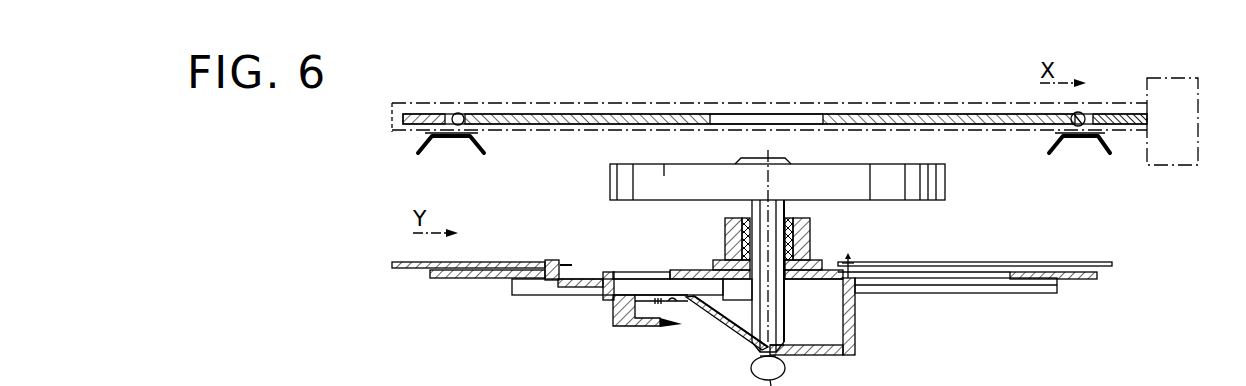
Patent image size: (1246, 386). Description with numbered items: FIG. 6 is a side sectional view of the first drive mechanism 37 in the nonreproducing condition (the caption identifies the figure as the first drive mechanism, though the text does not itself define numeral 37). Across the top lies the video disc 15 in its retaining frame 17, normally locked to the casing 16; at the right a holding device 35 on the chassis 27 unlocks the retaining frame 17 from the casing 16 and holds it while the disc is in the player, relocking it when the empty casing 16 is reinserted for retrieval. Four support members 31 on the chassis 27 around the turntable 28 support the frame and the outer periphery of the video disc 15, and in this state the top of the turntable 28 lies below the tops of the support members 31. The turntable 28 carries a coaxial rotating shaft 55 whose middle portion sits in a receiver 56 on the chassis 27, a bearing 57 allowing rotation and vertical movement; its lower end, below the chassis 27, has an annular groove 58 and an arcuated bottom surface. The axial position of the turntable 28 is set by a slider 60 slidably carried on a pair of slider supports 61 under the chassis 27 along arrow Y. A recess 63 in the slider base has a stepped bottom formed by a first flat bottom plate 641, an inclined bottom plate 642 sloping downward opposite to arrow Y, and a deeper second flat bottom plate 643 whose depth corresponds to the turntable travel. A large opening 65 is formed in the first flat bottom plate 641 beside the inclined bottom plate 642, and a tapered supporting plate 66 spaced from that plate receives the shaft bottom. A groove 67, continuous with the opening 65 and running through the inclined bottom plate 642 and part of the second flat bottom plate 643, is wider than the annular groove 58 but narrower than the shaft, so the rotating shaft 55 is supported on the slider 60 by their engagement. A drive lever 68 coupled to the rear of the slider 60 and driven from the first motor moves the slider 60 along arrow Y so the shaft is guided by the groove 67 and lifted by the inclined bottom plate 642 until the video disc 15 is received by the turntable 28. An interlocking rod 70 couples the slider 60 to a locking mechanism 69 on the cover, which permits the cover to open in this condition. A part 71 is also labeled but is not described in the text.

The video disc 15 is at (897, 118).
The casing 16 is at (850, 113).
The retaining frame 17 is at (420, 115).
The chassis 27 is at (450, 278).
The turntable 28 is at (947, 184).
The support members 31 is at (446, 139).
The holding device 35 is at (1196, 112).
The arm assembly 37 is at (970, 310).
The rotating shaft 55 is at (790, 211).
The receiver 56 is at (725, 240).
The bearing 57 is at (797, 249).
The annular groove 58 is at (780, 340).
The slider 60 is at (606, 304).
The slider supports 61 is at (525, 296).
The recess 63 is at (856, 355).
The large opening 65 is at (714, 312).
The supporting plate 66 is at (662, 330).
The groove 67 is at (731, 315).
The drive lever 68 is at (1071, 263).
The locking mechanism 69 is at (946, 284).
The interlocking rod 70 is at (484, 264).
The housing wall 71 is at (846, 322).
The first flat bottom plate 641 is at (622, 327).
The inclined bottom plate 642 is at (758, 352).
The second flat bottom plate 643 is at (821, 355).